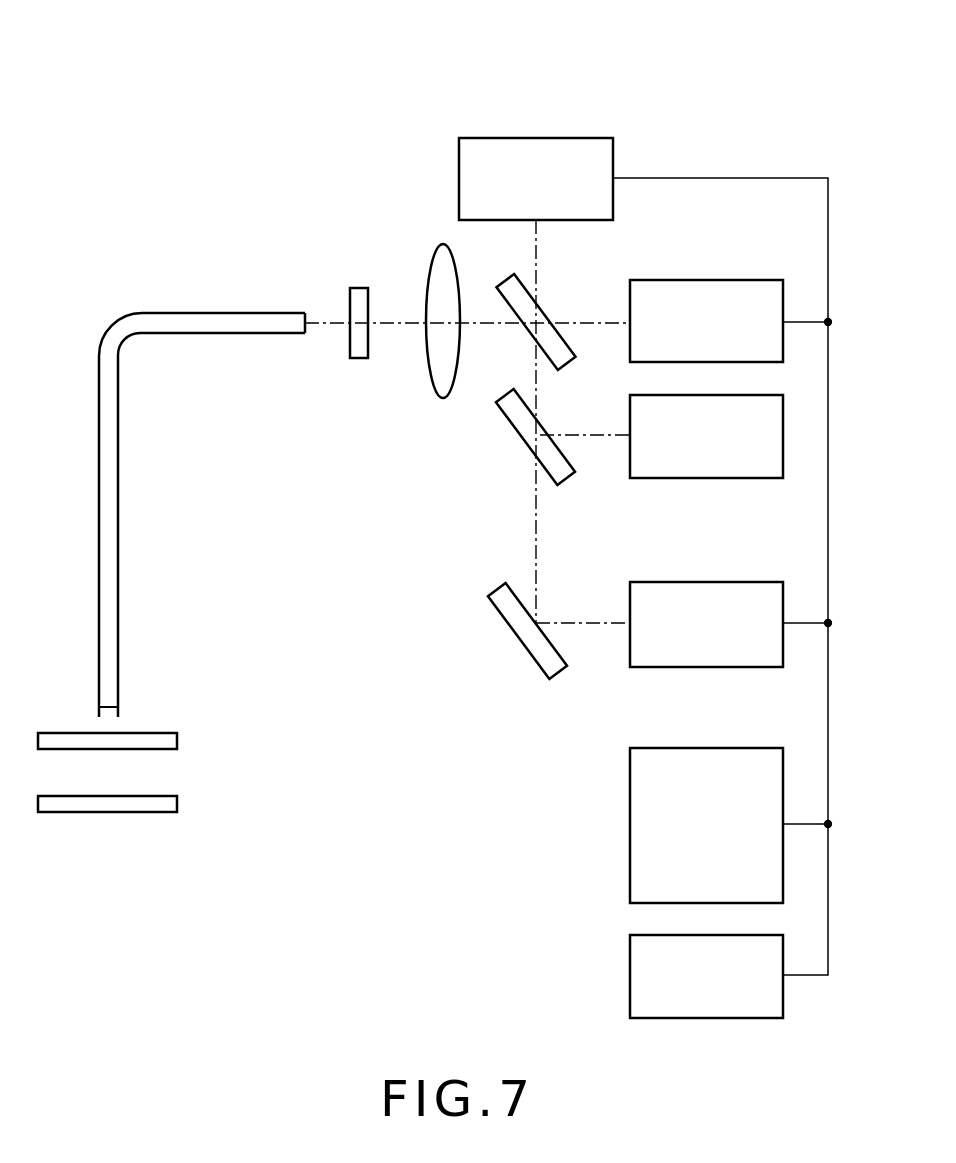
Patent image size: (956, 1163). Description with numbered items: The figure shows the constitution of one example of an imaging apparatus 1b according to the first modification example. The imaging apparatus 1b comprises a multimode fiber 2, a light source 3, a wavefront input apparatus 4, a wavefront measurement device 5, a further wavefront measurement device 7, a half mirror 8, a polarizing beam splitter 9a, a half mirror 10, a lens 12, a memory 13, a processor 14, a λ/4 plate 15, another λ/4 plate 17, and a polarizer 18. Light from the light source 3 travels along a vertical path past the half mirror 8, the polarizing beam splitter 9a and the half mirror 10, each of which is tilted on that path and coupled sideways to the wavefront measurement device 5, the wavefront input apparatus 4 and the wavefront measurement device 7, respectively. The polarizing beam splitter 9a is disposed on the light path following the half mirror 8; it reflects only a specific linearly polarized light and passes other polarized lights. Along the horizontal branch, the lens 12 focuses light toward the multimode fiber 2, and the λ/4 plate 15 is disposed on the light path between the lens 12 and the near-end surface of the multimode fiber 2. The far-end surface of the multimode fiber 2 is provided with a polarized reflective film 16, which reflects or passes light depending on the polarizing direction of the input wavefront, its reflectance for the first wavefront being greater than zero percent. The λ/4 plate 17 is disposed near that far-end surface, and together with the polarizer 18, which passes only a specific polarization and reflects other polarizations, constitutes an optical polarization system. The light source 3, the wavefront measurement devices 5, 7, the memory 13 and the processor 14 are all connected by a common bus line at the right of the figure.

The imaging apparatus 1b is at (713, 78).
The multimode fiber 2 is at (247, 313).
The light source 3 is at (574, 138).
The wavefront input apparatus 4 is at (745, 395).
The wavefront measurement device 5 is at (745, 280).
The wavefront measurement device 7 is at (745, 582).
The half mirror 8 is at (566, 365).
The polarizing beam splitter 9a is at (566, 479).
The half mirror 10 is at (560, 673).
The lens 12 is at (431, 265).
The memory 13 is at (745, 748).
The processor 14 is at (745, 935).
The λ/4 plate 15 is at (356, 288).
The polarized reflective film 16 is at (119, 712).
The λ/4 plate 17 is at (178, 740).
The polarizer 18 is at (178, 803).